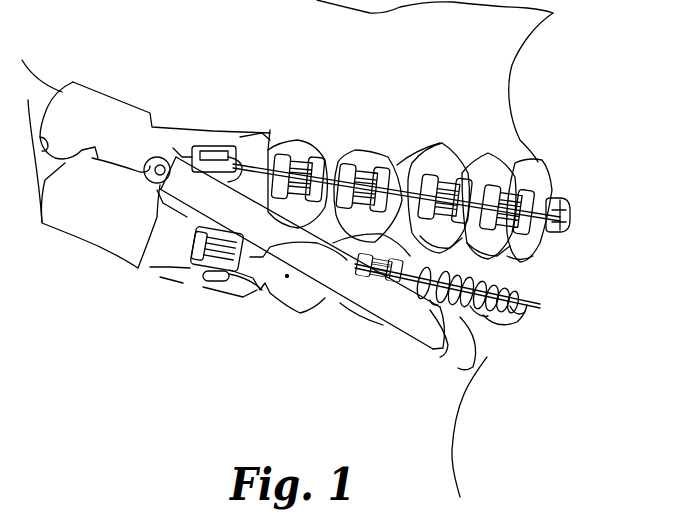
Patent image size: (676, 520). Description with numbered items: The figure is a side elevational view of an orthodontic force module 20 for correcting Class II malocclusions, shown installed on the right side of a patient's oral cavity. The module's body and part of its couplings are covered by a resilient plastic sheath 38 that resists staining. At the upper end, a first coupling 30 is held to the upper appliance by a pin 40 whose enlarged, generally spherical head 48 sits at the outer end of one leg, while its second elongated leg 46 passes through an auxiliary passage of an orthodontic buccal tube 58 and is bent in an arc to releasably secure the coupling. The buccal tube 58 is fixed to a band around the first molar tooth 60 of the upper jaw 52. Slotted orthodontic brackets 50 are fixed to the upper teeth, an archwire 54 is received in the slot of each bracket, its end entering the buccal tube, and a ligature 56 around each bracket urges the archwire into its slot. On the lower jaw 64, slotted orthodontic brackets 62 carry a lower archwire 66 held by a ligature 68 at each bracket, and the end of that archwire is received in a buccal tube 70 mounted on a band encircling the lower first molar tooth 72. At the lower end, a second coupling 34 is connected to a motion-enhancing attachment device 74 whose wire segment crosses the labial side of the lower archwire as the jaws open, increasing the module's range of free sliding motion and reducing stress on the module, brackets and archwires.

The orthodontic force module 20 is at (342, 307).
The first coupling 30 is at (161, 154).
The second coupling 34 is at (437, 352).
The plastic sheath 38 is at (405, 323).
The pin 40 is at (150, 153).
The second elongated leg 46 is at (205, 152).
The enlarged head 48 is at (157, 180).
The slotted orthodontic brackets 50 is at (377, 160).
The upper jaw 52 is at (497, 72).
The archwire 54 is at (549, 191).
The ligature 56 is at (490, 172).
The orthodontic buccal tube 58 is at (223, 146).
The first molar tooth 60 is at (249, 141).
The slotted orthodontic brackets 62 is at (502, 322).
The lower jaw 64 is at (450, 475).
The lower archwire 66 is at (185, 262).
The ligature 68 is at (510, 312).
The buccal tube 70 is at (197, 264).
The lower first molar tooth 72 is at (148, 258).
The attachment device 74 is at (446, 338).